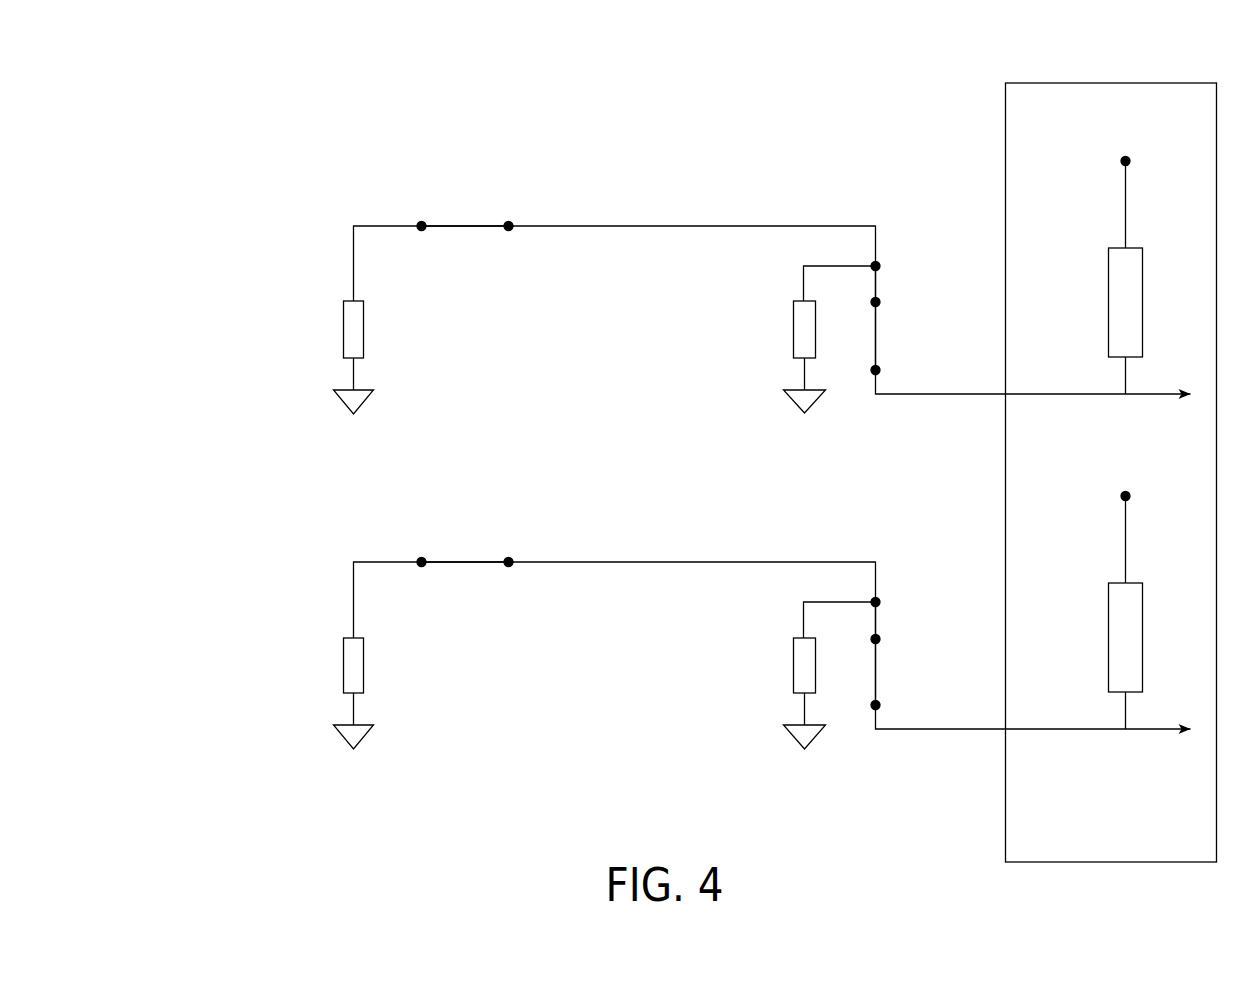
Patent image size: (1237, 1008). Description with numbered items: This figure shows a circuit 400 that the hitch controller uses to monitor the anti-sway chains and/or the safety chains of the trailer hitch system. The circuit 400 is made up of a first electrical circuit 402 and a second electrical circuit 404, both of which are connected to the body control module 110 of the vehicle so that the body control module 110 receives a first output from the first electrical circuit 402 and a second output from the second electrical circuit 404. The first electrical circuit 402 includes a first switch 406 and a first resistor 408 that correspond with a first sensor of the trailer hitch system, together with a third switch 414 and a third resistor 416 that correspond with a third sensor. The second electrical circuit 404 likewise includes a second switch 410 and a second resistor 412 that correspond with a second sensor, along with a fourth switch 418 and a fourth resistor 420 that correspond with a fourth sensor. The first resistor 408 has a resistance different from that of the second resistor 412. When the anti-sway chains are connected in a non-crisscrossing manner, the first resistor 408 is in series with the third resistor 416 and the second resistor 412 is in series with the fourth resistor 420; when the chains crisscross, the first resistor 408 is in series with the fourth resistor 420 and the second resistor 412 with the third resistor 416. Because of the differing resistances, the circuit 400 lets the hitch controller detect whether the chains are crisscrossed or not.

The circuit 400 is at (305, 118).
The first electrical circuit 402 is at (276, 287).
The second electrical circuit 404 is at (276, 623).
The first switch 406 is at (464, 225).
The second switch 410 is at (464, 561).
The first resistor 408 is at (363, 327).
The second resistor 412 is at (363, 663).
The third resistor 416 is at (793, 327).
The fourth resistor 420 is at (793, 662).
The third switch 414 is at (875, 338).
The fourth switch 418 is at (875, 674).
The body control module 110 is at (1110, 82).